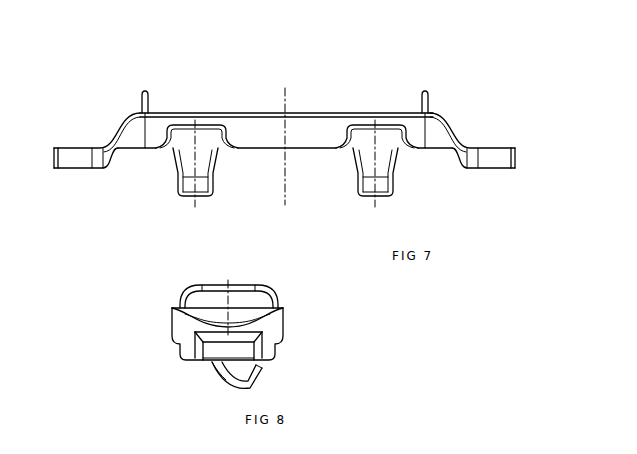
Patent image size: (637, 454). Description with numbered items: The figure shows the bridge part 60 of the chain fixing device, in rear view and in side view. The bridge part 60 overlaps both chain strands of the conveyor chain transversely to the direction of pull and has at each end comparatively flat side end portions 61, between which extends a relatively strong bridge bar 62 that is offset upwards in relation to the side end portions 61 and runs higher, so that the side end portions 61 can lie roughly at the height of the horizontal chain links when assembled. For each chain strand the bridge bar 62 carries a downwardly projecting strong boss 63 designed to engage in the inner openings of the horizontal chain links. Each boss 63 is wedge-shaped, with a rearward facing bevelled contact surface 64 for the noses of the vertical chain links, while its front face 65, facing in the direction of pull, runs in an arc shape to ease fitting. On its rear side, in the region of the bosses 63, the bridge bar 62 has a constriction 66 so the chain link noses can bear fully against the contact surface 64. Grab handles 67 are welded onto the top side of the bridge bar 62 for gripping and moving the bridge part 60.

In FIG. 7, the bridge part 60 is at (140, 190).
In FIG. 8, the bridge part 60 is at (324, 308).
In FIG. 7, the side end portions 61 is at (75, 156).
In FIG. 8, the side end portions 61 is at (242, 352).
In FIG. 7, the bridge bar 62 is at (245, 124).
In FIG. 8, the bridge bar 62 is at (176, 327).
In FIG. 7, the boss 63 is at (202, 167).
In FIG. 8, the boss 63 is at (238, 373).
In FIG. 8, the contact surface 64 is at (262, 374).
In FIG. 8, the front face 65 is at (214, 370).
In FIG. 7, the constriction 66 is at (187, 133).
In FIG. 8, the grab handles 67 is at (222, 285).